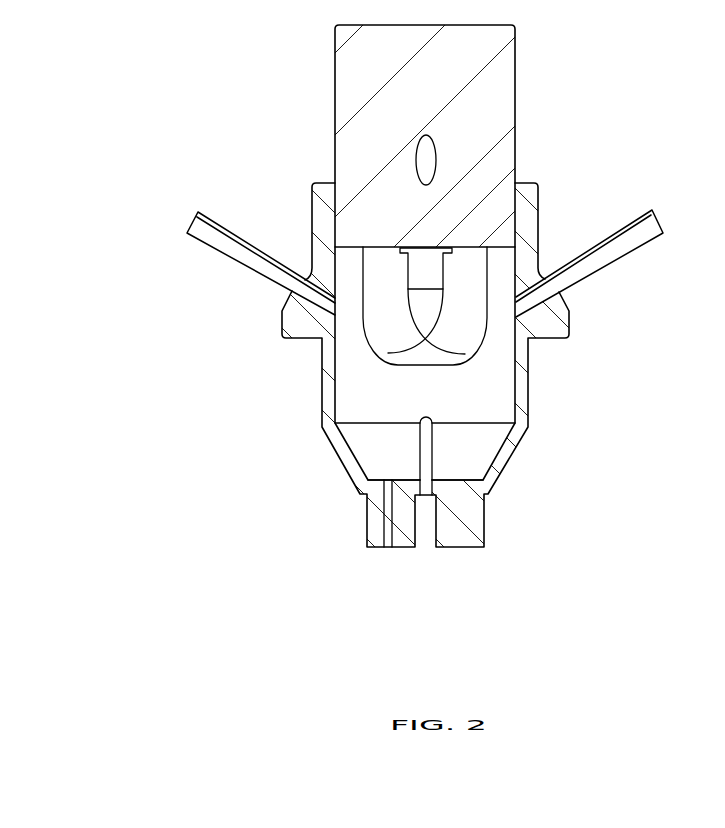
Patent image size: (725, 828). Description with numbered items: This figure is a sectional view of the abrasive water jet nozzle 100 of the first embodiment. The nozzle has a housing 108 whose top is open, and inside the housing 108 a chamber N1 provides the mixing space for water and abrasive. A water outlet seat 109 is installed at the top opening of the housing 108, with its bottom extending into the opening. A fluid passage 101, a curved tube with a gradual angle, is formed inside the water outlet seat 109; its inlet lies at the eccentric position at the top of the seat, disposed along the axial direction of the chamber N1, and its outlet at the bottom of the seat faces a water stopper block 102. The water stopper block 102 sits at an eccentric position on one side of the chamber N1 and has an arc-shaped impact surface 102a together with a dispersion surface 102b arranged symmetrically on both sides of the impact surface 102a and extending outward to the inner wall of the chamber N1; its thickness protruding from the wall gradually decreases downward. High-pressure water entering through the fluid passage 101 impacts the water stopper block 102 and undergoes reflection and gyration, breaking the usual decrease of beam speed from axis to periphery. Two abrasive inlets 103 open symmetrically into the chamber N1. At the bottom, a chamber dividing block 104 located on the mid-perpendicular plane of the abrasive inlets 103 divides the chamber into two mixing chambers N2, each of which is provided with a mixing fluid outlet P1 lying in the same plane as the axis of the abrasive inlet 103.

The abrasive water jet nozzle 100 is at (289, 70).
The water outlet seat 109 is at (515, 83).
The fluid passage 101 is at (425, 163).
The housing 108 is at (312, 218).
The abrasive inlets 103 is at (610, 268).
The water stopper block 102 is at (501, 341).
The impact surface 102a is at (423, 277).
The dispersion surface 102b is at (467, 293).
The chamber N1 is at (355, 388).
The mixing chambers N2 is at (375, 450).
The chamber dividing block 104 is at (433, 443).
The mixing fluid outlet P1 is at (387, 538).